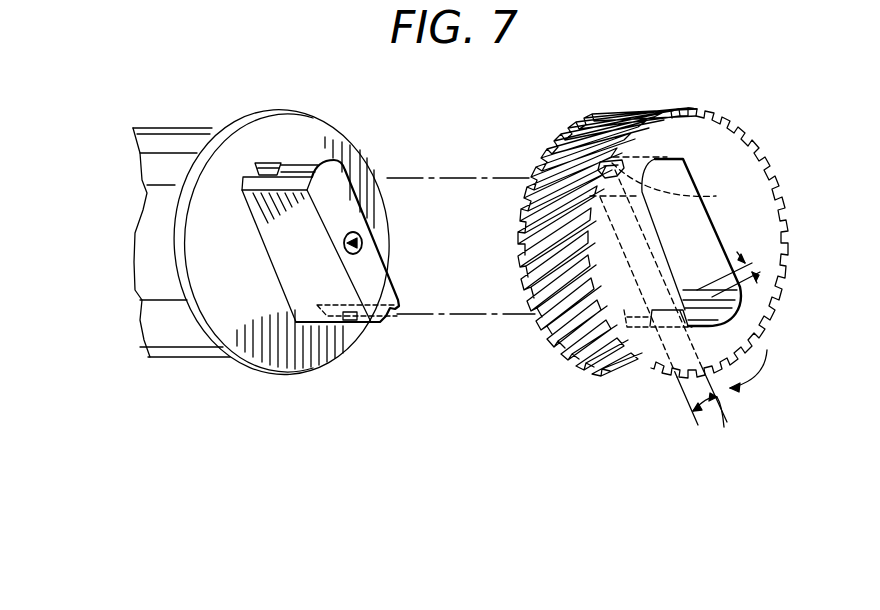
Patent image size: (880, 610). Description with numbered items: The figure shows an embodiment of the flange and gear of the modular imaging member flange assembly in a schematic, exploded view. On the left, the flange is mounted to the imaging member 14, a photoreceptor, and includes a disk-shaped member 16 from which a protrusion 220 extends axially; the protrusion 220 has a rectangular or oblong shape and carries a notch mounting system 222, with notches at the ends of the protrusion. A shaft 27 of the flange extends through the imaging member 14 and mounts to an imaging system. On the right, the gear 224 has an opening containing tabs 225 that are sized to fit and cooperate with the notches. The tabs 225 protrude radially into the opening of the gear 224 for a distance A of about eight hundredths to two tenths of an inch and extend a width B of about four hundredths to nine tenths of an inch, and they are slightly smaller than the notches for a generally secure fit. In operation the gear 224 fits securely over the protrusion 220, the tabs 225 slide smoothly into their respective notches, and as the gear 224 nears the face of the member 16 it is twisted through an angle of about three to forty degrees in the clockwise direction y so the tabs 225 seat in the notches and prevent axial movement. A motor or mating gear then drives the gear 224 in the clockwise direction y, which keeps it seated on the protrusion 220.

The imaging member 14 is at (192, 132).
The member 16 is at (298, 126).
The protrusion 220 is at (285, 243).
The notch mounting system 222 is at (266, 163).
The shaft 27 is at (362, 243).
The gear 224 is at (748, 163).
The tabs 225 is at (633, 290).
The distance A is at (752, 265).
The width B is at (705, 407).
The clockwise direction y is at (777, 362).